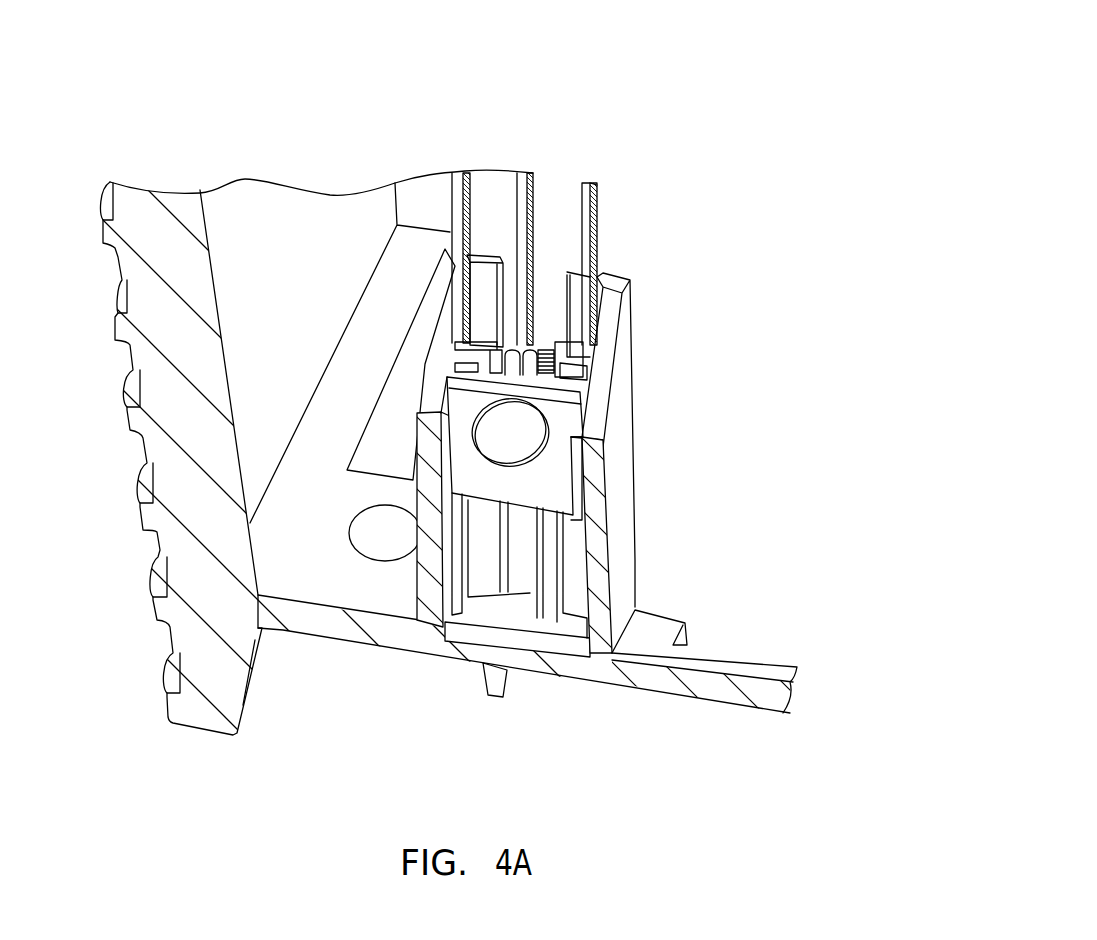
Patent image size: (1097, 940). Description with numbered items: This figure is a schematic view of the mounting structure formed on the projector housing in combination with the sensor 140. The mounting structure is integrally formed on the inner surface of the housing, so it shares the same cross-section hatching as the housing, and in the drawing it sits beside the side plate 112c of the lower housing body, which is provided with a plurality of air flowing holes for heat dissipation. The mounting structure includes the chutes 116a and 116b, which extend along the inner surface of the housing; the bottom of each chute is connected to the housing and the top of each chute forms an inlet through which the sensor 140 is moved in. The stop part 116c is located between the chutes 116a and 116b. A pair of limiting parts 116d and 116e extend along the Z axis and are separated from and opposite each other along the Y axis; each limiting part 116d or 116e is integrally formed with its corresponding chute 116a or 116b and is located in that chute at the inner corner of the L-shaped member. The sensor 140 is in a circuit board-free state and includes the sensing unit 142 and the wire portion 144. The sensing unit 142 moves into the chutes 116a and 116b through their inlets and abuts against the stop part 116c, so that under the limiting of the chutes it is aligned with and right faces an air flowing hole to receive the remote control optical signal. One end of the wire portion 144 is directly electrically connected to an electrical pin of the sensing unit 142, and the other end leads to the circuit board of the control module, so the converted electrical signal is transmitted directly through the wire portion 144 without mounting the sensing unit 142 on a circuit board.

The side plate 112c is at (270, 205).
The chute 116a is at (623, 375).
The chute 116b is at (413, 447).
The stop part 116c is at (527, 620).
The limiting part 116d is at (463, 657).
The limiting part 116e is at (590, 690).
The sensor 140 is at (602, 258).
The sensing unit 142 is at (610, 510).
The wire portion 144 is at (667, 219).